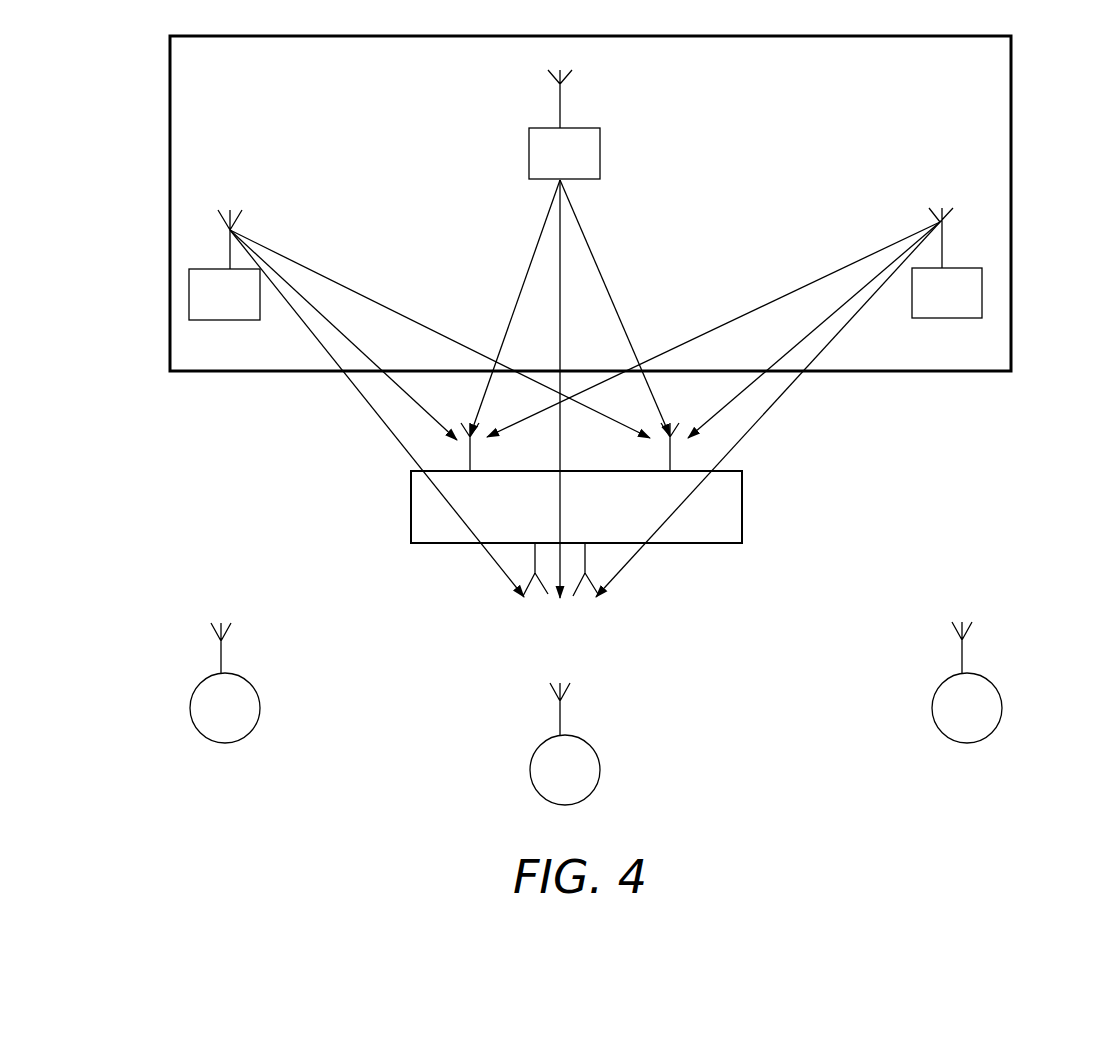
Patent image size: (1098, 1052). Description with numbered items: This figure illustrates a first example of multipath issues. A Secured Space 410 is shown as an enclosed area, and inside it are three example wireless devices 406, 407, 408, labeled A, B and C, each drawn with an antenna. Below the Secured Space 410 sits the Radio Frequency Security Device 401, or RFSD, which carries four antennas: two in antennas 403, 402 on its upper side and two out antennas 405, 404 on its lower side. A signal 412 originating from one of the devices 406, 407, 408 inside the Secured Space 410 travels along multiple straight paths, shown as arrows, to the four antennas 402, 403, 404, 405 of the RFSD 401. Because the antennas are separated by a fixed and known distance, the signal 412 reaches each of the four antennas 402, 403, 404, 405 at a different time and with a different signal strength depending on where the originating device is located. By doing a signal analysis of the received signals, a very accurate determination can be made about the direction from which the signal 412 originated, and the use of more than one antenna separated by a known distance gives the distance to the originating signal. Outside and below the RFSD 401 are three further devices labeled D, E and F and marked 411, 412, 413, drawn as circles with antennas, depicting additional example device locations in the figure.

The Radio Frequency Security Device (RFSD) 401 is at (608, 507).
The antenna 402 is at (748, 450).
The antenna 403 is at (381, 450).
The antenna 404 is at (684, 575).
The antenna 405 is at (430, 575).
The wireless device 406 is at (224, 276).
The wireless device 407 is at (592, 124).
The wireless device 408 is at (947, 281).
The Secured Space 410 is at (624, 203).
The receiver D 411 is at (225, 701).
The signal 412 is at (589, 518).
The receiver F 413 is at (985, 682).